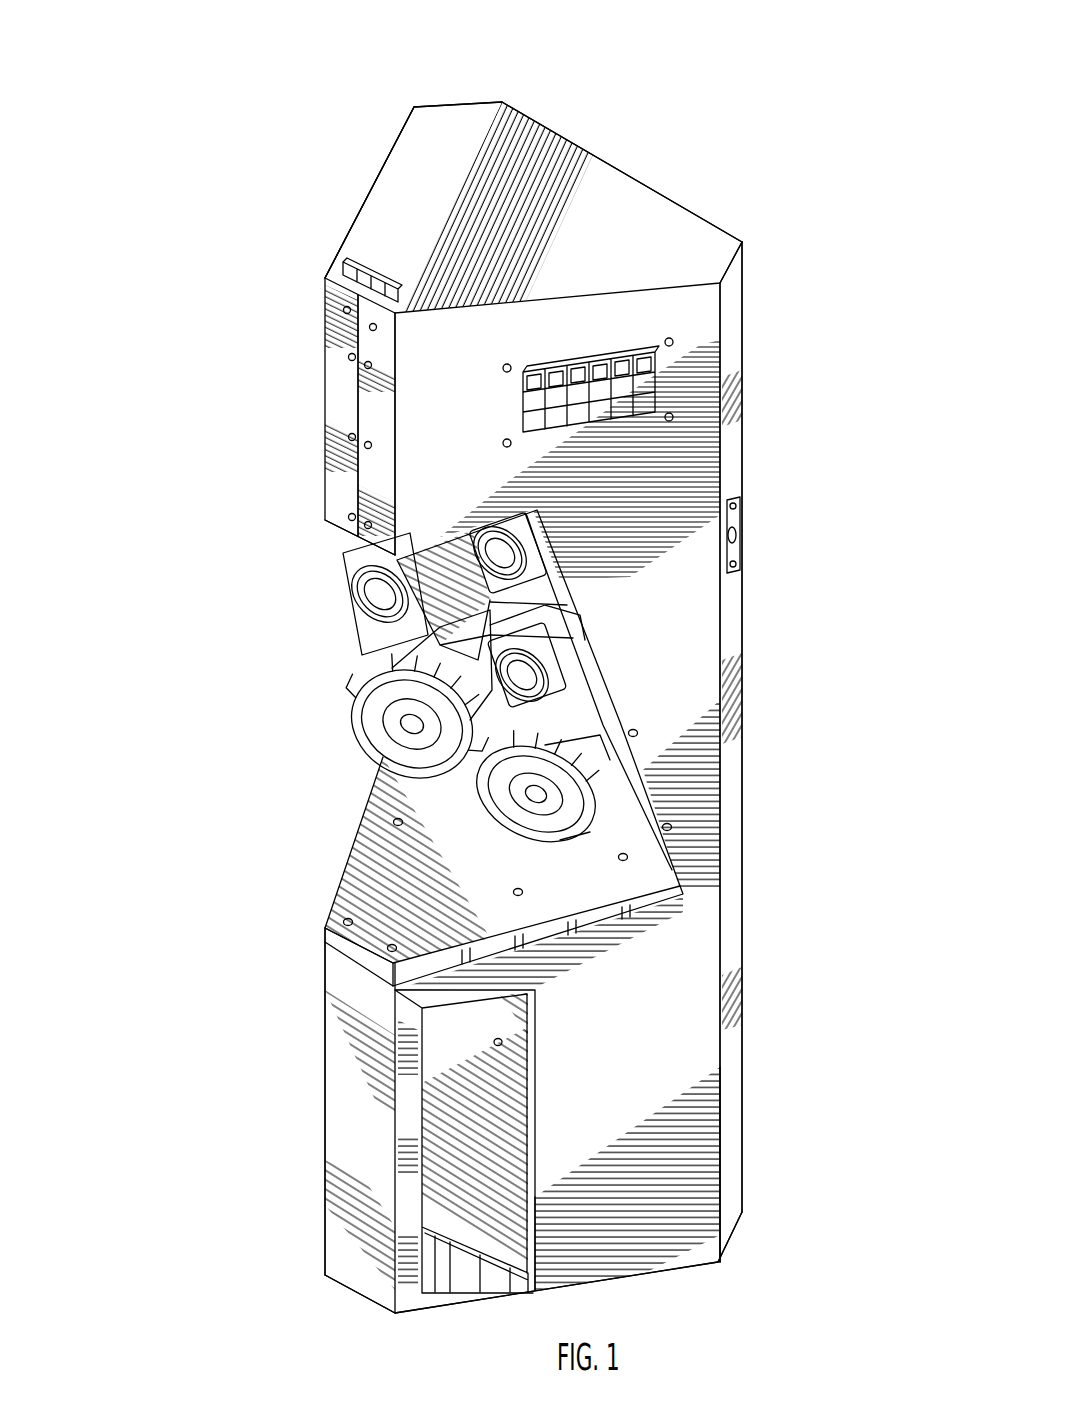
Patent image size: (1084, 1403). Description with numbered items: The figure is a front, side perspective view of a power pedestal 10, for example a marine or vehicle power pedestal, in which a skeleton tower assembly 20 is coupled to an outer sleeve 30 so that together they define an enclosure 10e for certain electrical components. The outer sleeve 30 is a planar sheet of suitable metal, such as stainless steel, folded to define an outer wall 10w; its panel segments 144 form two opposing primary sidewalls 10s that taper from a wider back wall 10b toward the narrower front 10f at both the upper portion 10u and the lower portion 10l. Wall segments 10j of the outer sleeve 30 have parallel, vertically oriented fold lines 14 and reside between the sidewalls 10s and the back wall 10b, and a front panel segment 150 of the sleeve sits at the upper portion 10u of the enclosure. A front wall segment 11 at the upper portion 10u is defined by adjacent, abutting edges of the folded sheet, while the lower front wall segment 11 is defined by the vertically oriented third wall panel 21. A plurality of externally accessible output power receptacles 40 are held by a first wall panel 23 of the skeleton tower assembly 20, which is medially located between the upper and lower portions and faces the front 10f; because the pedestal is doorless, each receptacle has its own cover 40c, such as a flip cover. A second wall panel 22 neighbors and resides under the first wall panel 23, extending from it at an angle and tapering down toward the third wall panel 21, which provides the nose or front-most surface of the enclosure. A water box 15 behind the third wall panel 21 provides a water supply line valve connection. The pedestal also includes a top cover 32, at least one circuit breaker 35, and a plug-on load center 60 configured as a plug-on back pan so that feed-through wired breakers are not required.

The power pedestal 10 is at (648, 103).
The back wall 10b is at (655, 183).
The enclosure 10e is at (250, 1124).
The front 10f is at (330, 425).
The wall segments 10j is at (470, 100).
The lower portion 10l is at (648, 1237).
The sidewalls 10s is at (373, 183).
The upper portion 10u is at (420, 410).
The outer wall 10w is at (700, 397).
The front wall segment 11 is at (308, 1130).
The fold lines 14 is at (743, 1213).
The water box 15 is at (484, 1185).
The skeleton tower assembly 20 is at (440, 632).
The third wall panel 21 is at (377, 1203).
The second wall panel 22 is at (495, 859).
The first wall panel 23 is at (378, 605).
The outer sleeve 30 is at (680, 503).
The top cover 32 is at (465, 155).
The circuit breaker 35 is at (742, 540).
The output power receptacles 40 is at (350, 590).
The covers 40c is at (548, 830).
The load center 60 is at (622, 372).
The panel segments 144 is at (603, 1140).
The front panel segment 150 is at (363, 478).